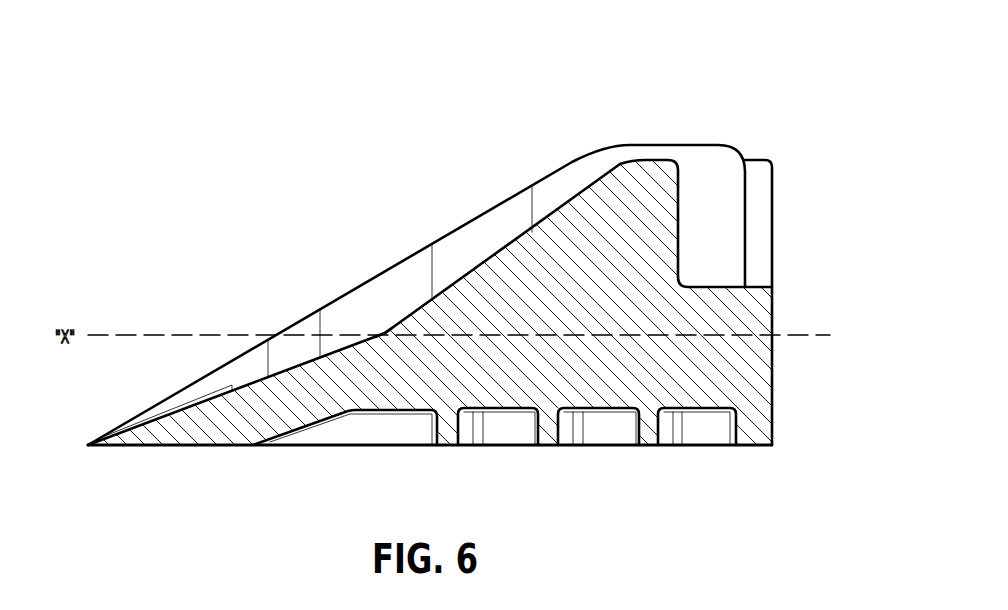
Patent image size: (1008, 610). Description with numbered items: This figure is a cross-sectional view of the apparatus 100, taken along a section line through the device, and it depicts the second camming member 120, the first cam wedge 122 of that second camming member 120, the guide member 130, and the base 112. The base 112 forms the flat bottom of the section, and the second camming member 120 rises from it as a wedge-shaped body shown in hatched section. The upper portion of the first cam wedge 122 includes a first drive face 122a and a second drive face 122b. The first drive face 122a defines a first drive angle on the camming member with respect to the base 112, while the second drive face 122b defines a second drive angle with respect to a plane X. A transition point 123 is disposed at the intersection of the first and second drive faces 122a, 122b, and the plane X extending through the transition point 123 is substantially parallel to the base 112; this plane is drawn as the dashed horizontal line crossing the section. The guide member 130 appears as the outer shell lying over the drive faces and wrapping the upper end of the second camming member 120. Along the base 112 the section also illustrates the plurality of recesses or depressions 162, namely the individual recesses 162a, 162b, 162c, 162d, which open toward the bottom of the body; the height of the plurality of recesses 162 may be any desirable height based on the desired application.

The apparatus 100 is at (781, 86).
The base 112 is at (195, 452).
The second camming member 120 is at (770, 165).
The first cam wedge 122 is at (748, 317).
The first drive face 122a is at (290, 370).
The second drive face 122b is at (492, 257).
The transition point 123 is at (382, 333).
The guide member 130 is at (723, 143).
The plurality of recesses/depressions 162 is at (560, 453).
The recess 162a is at (700, 448).
The recess 162b is at (605, 448).
The recess 162c is at (493, 448).
The recess 162d is at (363, 450).